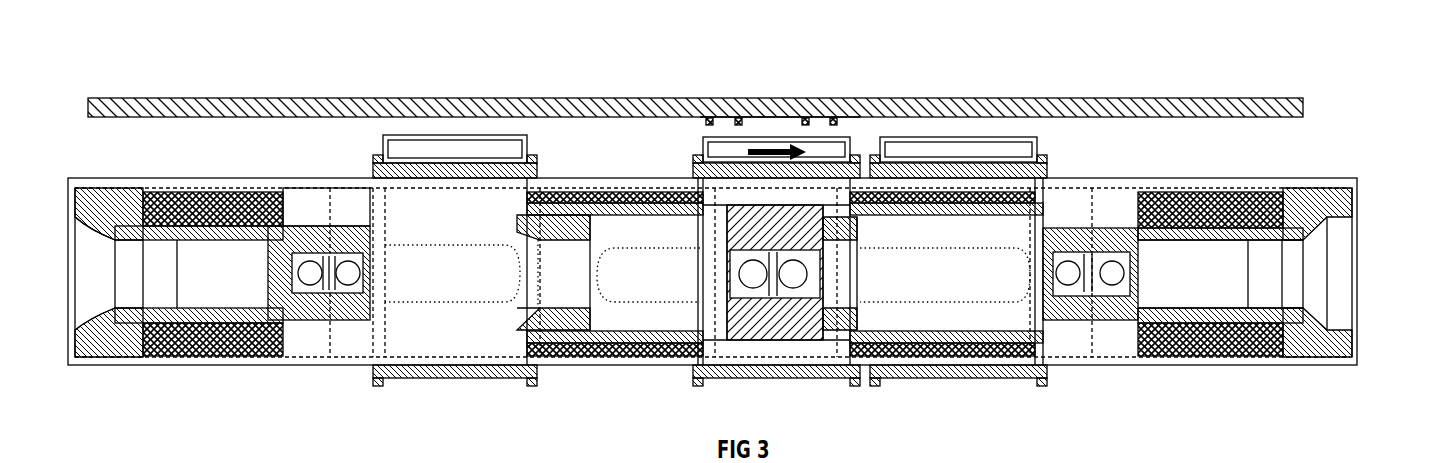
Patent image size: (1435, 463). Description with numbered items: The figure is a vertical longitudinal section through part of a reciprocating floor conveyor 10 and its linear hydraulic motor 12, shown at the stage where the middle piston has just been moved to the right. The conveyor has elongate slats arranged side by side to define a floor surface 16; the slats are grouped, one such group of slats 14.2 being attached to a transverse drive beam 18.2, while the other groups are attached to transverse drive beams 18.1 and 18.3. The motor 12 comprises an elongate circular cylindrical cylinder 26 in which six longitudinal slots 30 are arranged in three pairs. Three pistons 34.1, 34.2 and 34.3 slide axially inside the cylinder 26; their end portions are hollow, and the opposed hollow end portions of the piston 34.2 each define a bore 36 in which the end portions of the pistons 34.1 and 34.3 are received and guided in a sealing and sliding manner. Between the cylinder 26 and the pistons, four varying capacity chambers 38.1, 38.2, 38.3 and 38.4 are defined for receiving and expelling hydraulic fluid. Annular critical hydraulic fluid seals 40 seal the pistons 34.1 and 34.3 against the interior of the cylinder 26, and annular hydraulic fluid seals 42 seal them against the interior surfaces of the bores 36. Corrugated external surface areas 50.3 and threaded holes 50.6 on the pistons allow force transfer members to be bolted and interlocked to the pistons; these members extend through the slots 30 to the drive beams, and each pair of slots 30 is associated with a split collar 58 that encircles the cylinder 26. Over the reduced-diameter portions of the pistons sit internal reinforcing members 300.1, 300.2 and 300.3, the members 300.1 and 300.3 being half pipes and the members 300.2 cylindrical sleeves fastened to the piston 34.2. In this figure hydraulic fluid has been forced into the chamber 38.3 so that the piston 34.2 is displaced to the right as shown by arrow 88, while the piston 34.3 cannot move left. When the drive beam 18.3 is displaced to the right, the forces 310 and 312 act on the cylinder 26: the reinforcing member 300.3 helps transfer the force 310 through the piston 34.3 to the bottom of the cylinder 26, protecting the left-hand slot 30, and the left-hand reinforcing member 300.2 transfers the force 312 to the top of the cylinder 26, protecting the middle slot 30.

The reciprocating floor conveyor 10 is at (1117, 74).
The linear hydraulic motor 12 is at (1302, 151).
The group of slats 14.2 is at (884, 116).
The floor surface 16 is at (549, 95).
The transverse drive beam 18.1 is at (1048, 150).
The transverse drive beam 18.2 is at (703, 148).
The transverse drive beam 18.3 is at (383, 148).
The cylinder 26 is at (1332, 184).
The slots 30 is at (450, 358).
The piston 34.1 is at (1352, 350).
The piston 34.2 is at (790, 330).
The piston 34.3 is at (157, 360).
The bore 36 is at (547, 262).
The varying capacity chamber 38.1 is at (1323, 267).
The varying capacity chamber 38.2 is at (860, 345).
The varying capacity chamber 38.3 is at (662, 345).
The varying capacity chamber 38.4 is at (73, 362).
The annular critical hydraulic fluid seals 40 is at (105, 188).
The annular hydraulic fluid seals 42 is at (540, 300).
The corrugated external surface areas 50.3 is at (317, 228).
The threaded holes 50.6 is at (744, 252).
The split collar 58 is at (512, 380).
The arrow 88 is at (770, 146).
The internal reinforcing members 300.1 is at (1190, 360).
The internal reinforcing members 300.2 is at (626, 194).
The internal reinforcing members 300.3 is at (233, 362).
The force 310 is at (381, 126).
The force 312 is at (535, 400).